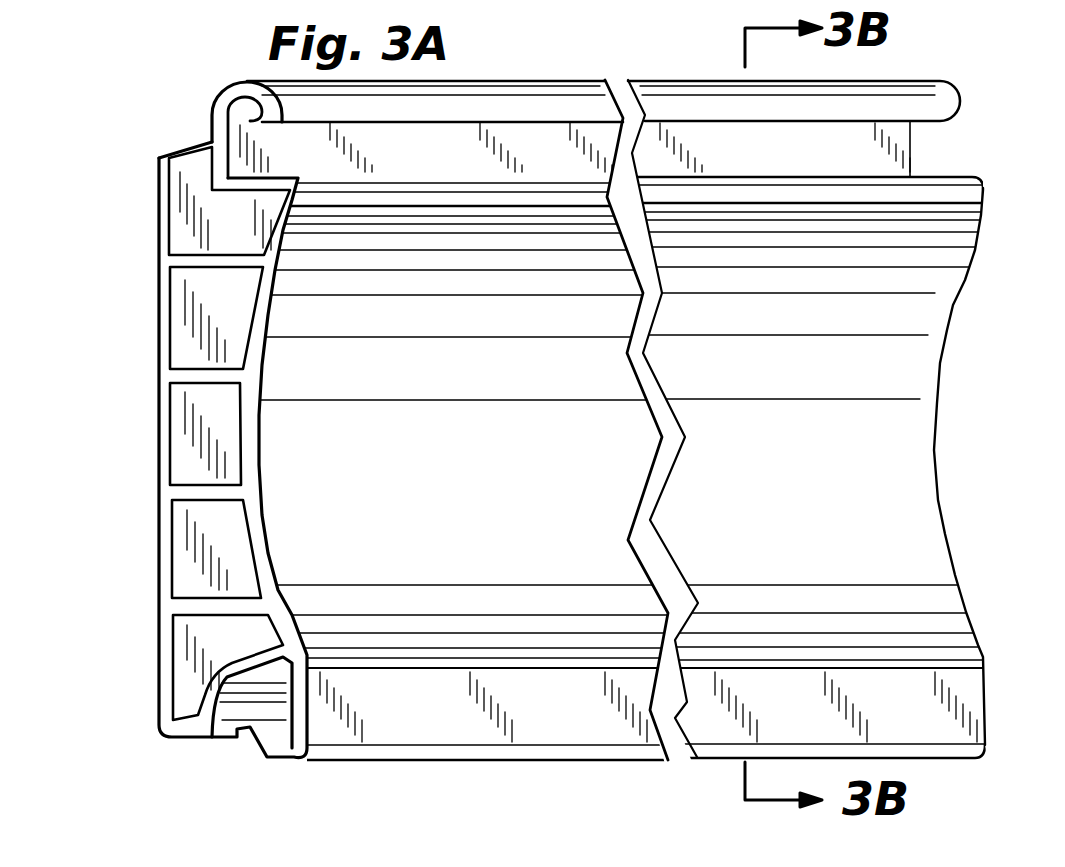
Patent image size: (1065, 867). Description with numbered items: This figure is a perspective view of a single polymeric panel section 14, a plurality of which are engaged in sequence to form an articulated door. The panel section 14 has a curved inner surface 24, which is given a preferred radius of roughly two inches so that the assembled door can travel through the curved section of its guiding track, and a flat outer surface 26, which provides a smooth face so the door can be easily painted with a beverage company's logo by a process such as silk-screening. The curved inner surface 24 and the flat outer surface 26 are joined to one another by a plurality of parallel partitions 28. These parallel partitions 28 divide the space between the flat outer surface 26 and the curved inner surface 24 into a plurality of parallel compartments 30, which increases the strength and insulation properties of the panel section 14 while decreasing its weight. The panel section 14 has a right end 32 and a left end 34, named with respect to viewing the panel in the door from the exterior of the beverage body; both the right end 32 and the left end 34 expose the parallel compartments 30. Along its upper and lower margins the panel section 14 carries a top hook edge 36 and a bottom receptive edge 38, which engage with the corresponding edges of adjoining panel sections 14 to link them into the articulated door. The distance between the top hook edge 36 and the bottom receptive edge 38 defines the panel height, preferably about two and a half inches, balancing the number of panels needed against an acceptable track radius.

The panel section 14 is at (362, 770).
The curved inner surface 24 is at (866, 488).
The flat outer surface 26 is at (160, 707).
The parallel partitions 28 is at (203, 262).
The parallel compartments 30 is at (205, 178).
The right end 32 is at (290, 227).
The left end 34 is at (935, 360).
The top hook edge 36 is at (502, 78).
The bottom receptive edge 38 is at (576, 761).